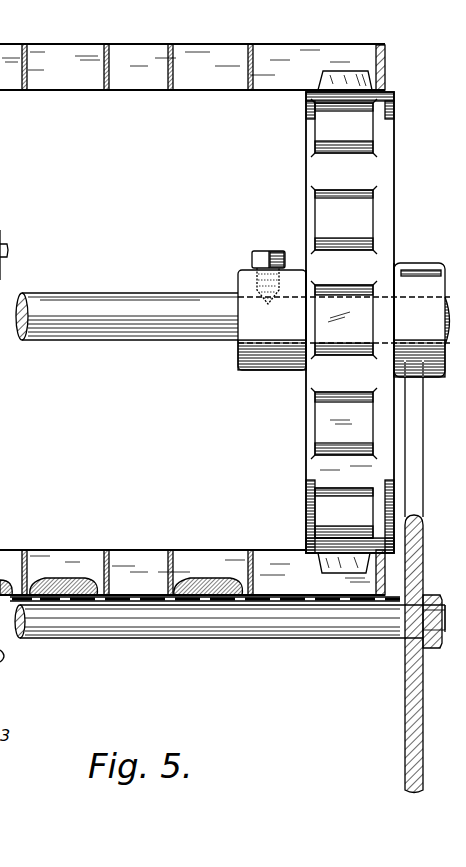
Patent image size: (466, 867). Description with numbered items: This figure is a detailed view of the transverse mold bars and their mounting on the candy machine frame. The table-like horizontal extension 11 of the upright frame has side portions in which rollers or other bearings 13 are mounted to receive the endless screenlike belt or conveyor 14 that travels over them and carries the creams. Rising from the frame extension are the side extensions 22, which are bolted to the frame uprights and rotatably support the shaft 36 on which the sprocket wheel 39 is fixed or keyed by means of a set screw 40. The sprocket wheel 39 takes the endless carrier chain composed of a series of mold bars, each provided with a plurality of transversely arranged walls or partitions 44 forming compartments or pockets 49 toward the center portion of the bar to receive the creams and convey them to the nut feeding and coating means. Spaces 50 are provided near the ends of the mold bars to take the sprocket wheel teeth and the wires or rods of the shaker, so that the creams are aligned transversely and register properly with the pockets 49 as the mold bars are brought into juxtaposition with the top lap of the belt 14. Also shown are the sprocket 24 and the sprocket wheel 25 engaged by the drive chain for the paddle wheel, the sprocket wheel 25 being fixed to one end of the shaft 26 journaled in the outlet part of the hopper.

The horizontal extension 11 is at (418, 716).
The rollers 13 is at (190, 614).
The endless belt 14 is at (155, 604).
The side extensions 22 is at (331, 78).
The sprocket 24 is at (11, 683).
The sprocket wheel 25 is at (11, 194).
The shaft 26 is at (10, 250).
The shaft 36 is at (105, 330).
The sprocket wheel 39 is at (388, 185).
The set screws 40 is at (259, 250).
The partitions 44 is at (102, 74).
The pockets 49 is at (86, 82).
The spaces 50 is at (362, 58).